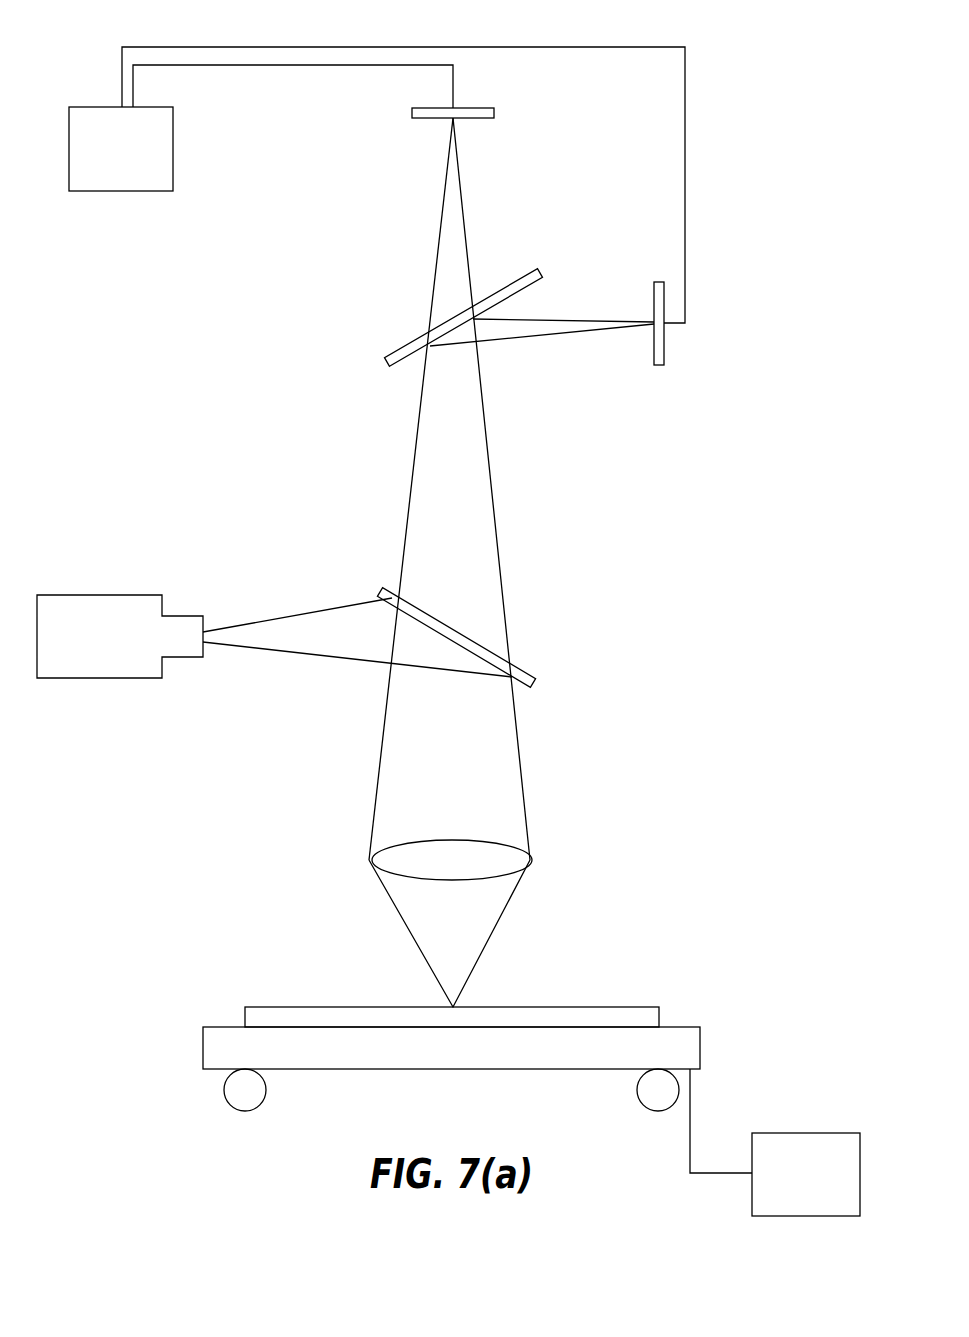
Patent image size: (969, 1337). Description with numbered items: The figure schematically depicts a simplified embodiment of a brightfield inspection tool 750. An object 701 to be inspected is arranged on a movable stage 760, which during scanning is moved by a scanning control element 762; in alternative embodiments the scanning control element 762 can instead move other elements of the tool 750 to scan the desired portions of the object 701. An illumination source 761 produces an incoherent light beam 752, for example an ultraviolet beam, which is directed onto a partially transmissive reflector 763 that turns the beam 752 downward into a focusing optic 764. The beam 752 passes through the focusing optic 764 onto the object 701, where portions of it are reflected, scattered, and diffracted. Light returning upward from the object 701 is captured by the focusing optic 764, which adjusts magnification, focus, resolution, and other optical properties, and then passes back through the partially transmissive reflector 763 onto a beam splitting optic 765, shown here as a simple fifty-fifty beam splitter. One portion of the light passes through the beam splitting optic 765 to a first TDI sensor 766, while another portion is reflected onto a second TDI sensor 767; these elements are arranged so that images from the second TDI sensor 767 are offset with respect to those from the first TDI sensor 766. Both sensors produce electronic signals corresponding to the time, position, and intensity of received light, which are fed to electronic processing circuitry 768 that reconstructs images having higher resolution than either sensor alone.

The brightfield inspection tool 750 is at (742, 148).
The electronic processing circuitry 768 is at (147, 161).
The first TDI sensor 766 is at (482, 107).
The second TDI sensor 767 is at (658, 366).
The beam splitting optic 765 is at (386, 364).
The partially transmissive reflector 763 is at (531, 681).
The illumination source 761 is at (105, 678).
The light beam 752 is at (398, 897).
The focusing optic 764 is at (532, 860).
The object 701 is at (660, 1020).
The movable stage 760 is at (700, 1053).
The scanning control element 762 is at (830, 1189).